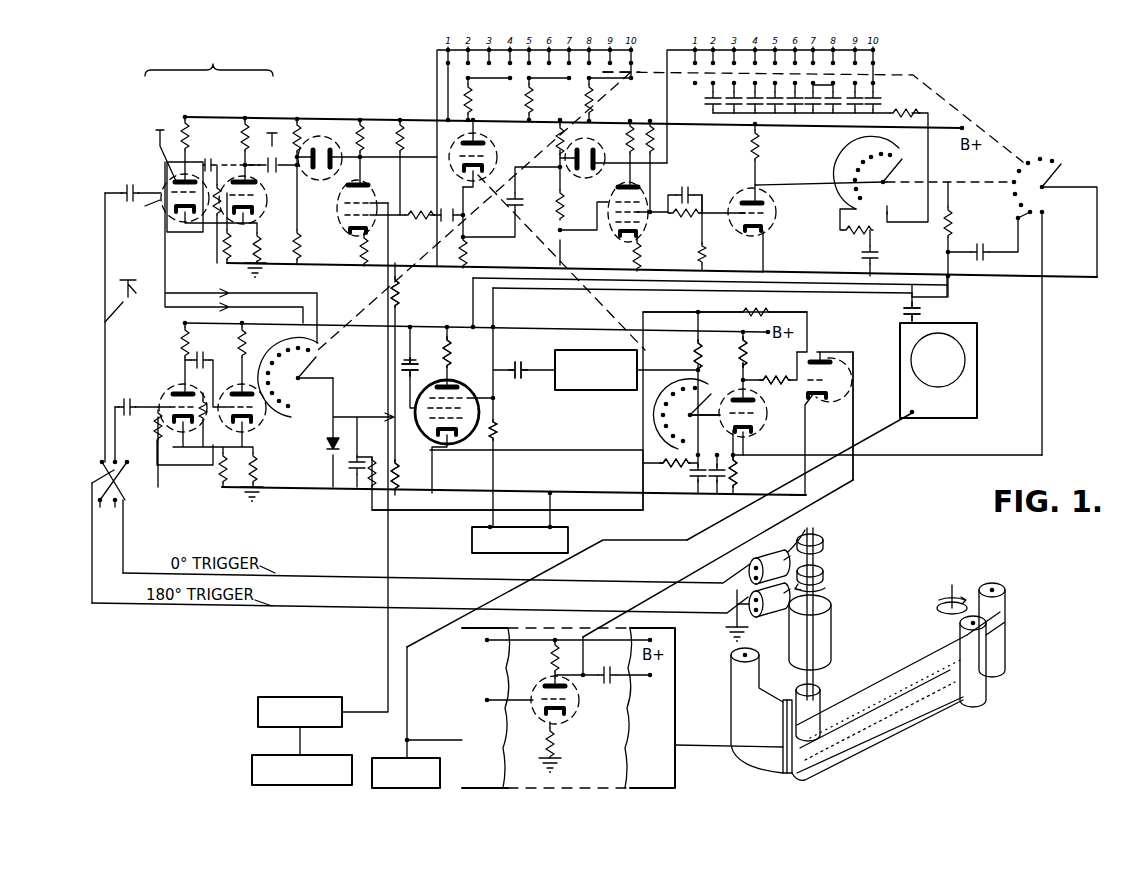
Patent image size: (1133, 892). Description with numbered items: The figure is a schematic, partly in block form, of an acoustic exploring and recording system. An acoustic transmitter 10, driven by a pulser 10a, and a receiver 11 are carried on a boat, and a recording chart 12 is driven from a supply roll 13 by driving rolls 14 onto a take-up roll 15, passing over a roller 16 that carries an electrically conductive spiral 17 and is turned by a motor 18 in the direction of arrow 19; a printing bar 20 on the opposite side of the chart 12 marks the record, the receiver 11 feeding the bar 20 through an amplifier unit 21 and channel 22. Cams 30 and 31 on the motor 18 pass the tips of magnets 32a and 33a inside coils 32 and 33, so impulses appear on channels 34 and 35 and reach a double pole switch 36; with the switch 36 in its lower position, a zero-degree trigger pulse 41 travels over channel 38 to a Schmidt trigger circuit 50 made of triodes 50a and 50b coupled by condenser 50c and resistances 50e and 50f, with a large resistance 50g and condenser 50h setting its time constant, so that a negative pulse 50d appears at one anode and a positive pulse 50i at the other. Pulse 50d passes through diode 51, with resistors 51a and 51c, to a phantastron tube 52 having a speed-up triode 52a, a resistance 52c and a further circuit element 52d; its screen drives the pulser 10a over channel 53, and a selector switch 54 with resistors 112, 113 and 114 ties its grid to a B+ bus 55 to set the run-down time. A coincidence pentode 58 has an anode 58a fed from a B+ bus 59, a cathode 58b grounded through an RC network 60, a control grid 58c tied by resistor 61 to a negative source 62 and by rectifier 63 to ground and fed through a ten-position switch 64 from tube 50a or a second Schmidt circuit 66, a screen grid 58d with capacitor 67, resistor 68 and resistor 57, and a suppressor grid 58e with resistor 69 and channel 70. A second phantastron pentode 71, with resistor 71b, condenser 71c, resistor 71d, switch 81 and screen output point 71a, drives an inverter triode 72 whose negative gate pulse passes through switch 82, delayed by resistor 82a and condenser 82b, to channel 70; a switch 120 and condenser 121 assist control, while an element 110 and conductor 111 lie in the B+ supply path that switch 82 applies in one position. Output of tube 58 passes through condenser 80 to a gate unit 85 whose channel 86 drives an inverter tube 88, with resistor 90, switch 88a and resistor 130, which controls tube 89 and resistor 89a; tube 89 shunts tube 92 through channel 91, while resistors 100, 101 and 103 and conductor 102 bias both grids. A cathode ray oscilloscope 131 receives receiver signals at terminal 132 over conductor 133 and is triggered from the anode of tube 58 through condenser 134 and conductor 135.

The acoustic transmitter 10 is at (253, 762).
The pulser 10a is at (287, 696).
The receiver 11 is at (380, 757).
The recording strip or chart 12 is at (917, 708).
The supply roll 13 is at (733, 652).
The driving rolls 14 is at (940, 609).
The take-up roll 15 is at (996, 584).
The roller 16 is at (816, 688).
The electrically conductive spiral 17 is at (818, 718).
The motor 18 is at (831, 608).
The arrow 19 is at (826, 590).
The printing bar 20 is at (783, 770).
The amplifier and printer control unit 21 is at (675, 695).
The channel 22 is at (722, 746).
The cam 30 is at (824, 572).
The cam 31 is at (824, 538).
The coil 32 is at (749, 615).
The central cylindrical magnet 32a is at (737, 600).
The coil 33 is at (778, 556).
The central cylindrical magnet 33a is at (805, 528).
The channel 34 is at (458, 612).
The channel 35 is at (652, 584).
The double throw, double pole switch 36 is at (126, 483).
The channel 38 is at (100, 310).
The 0-degree trigger pulse 41 is at (135, 293).
The Schmidt trigger circuit 50 is at (209, 155).
The triode 50a is at (170, 181).
The triode 50b is at (257, 210).
The condenser 50c is at (208, 160).
The negative rectangular pulse 50d is at (271, 152).
The resistance 50e is at (208, 222).
The resistance 50f is at (224, 240).
The resistance 50g is at (136, 211).
The condenser 50h is at (122, 192).
The positive rectangular pulse 50i is at (152, 140).
The diode 51 is at (331, 155).
The resistor 51a is at (317, 143).
The resistor 51c is at (300, 244).
The phantastron counter tube 52 is at (368, 185).
The speed-up triode 52a is at (486, 160).
The resistance 52c is at (415, 212).
The resistor 52d is at (452, 223).
The channel 53 is at (388, 278).
The ten-position selector switch 54 is at (631, 72).
The B+ bus 55 is at (343, 117).
The resistor 57 is at (402, 298).
The coincidence tube 58 is at (468, 416).
The anode 58a is at (445, 335).
The cathode 58b is at (449, 448).
The control grid 58c is at (428, 420).
The screen grid 58d is at (412, 407).
The suppressor grid 58e is at (465, 400).
The B+ supply bus 59 is at (548, 328).
The RC network 60 is at (740, 472).
The resistor 61 is at (368, 478).
The negative voltage source 62 is at (484, 553).
The rectifier 63 is at (326, 443).
The ten-position switch 64 is at (303, 385).
The second Schmidt trigger circuit 66 is at (212, 380).
The capacitor 67 is at (420, 372).
The resistor 68 is at (399, 462).
The resistor 69 is at (495, 430).
The channel 70 is at (632, 284).
The phantastron pentode 71 is at (612, 228).
The screen grid output point 71a is at (704, 196).
The resistor 71b is at (588, 150).
The condenser 71c is at (685, 192).
The resistor 71d is at (690, 218).
The inverter triode 72 is at (768, 213).
The condenser 80 is at (523, 369).
The multiterminal switch 81 is at (875, 80).
The multi-terminal switch 82 is at (896, 170).
The resistor 82a is at (848, 232).
The condenser 82b is at (879, 256).
The gate unit 85 is at (608, 350).
The output channel 86 is at (680, 380).
The inverter tube 88 is at (753, 428).
The switch 88a is at (683, 420).
The amplifier control tube 89 is at (828, 366).
The resistor 89a is at (768, 384).
The resistor 90 is at (748, 352).
The channel 91 is at (856, 381).
The tube 92 is at (567, 705).
The resistor 100 is at (702, 350).
The resistor 101 is at (750, 310).
The conductor 102 is at (640, 474).
The resistor 103 is at (705, 252).
The resistor 110 is at (905, 115).
The conductor 111 is at (893, 220).
The resistor 112 is at (472, 100).
The resistor 113 is at (533, 100).
The resistor 114 is at (594, 100).
The switch 120 is at (1060, 167).
The condenser 121 is at (980, 247).
The resistor 130 is at (672, 466).
The cathode ray oscilloscope 131 is at (977, 348).
The signal input terminal 132 is at (913, 416).
The conductor 133 is at (715, 525).
The condenser 134 is at (921, 311).
The conductor 135 is at (880, 289).